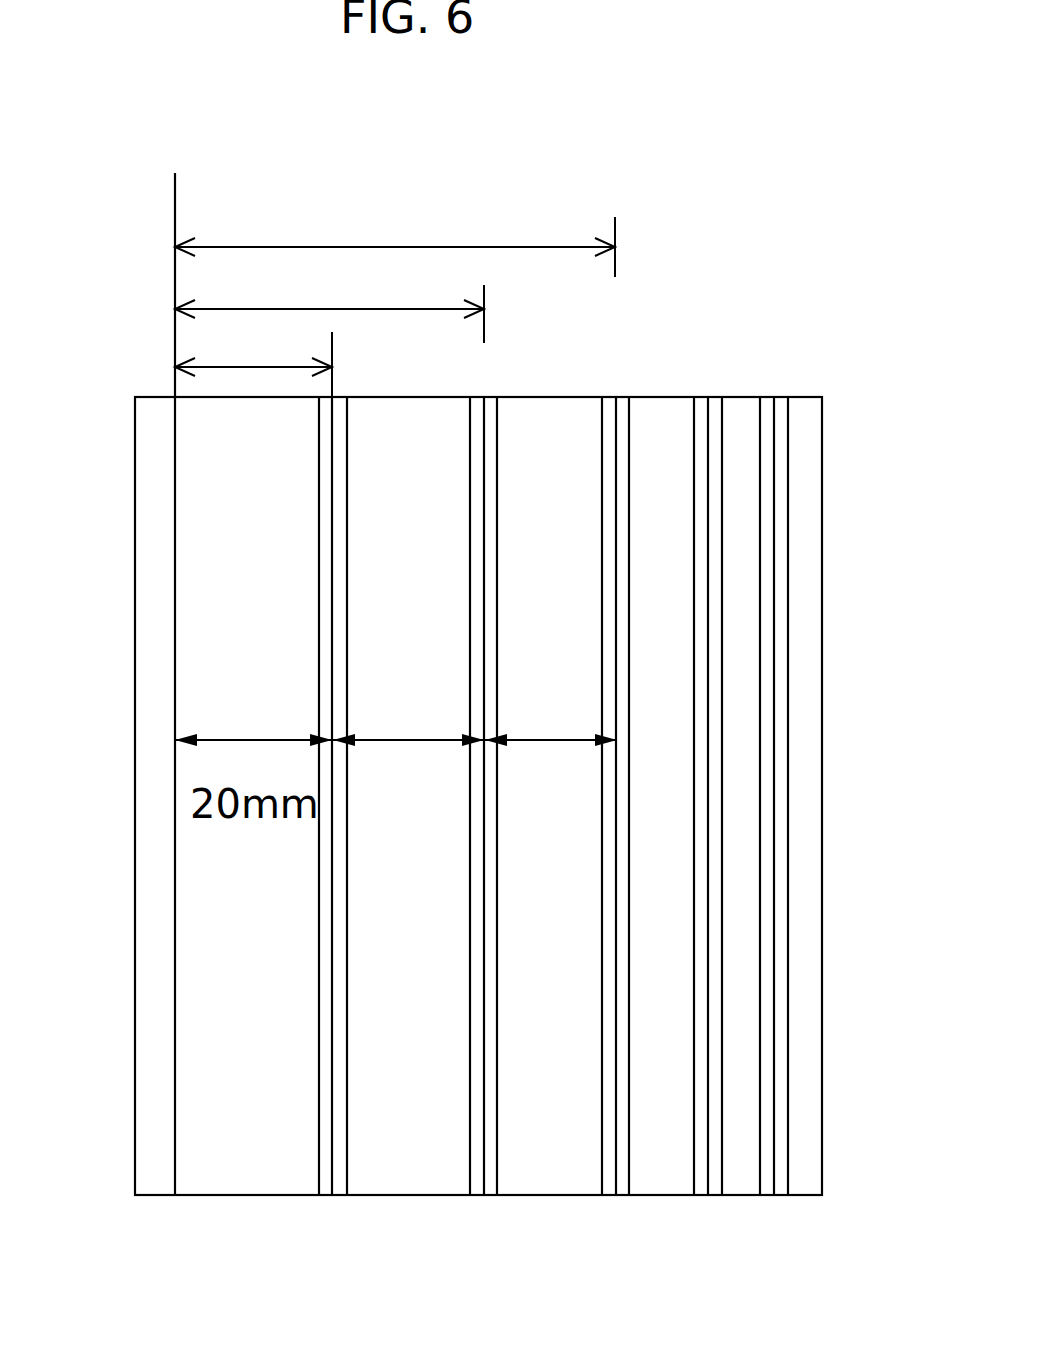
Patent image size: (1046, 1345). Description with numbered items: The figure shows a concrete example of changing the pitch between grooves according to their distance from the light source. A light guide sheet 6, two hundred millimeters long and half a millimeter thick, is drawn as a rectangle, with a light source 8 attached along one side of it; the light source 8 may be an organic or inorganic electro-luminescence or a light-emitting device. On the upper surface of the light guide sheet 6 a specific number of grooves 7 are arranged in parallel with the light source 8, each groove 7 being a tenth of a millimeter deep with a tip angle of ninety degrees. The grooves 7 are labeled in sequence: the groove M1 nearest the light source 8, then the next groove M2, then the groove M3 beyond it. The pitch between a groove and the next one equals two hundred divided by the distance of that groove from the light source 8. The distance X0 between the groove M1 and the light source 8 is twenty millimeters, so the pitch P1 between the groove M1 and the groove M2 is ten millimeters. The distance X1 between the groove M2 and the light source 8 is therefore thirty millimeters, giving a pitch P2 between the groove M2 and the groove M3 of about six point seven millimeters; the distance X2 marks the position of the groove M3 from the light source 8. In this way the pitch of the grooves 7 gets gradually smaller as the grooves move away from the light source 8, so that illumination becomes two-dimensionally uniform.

The light guide sheet 6 is at (227, 1180).
The groove 7 is at (712, 397).
The light source 8 is at (145, 673).
The groove M1 is at (333, 1192).
The groove M2 is at (487, 1192).
The groove M3 is at (618, 1192).
The distance X0 is at (253, 358).
The distance X1 is at (329, 302).
The distance X2 is at (395, 237).
The pitch P1 is at (408, 765).
The pitch P2 is at (551, 775).